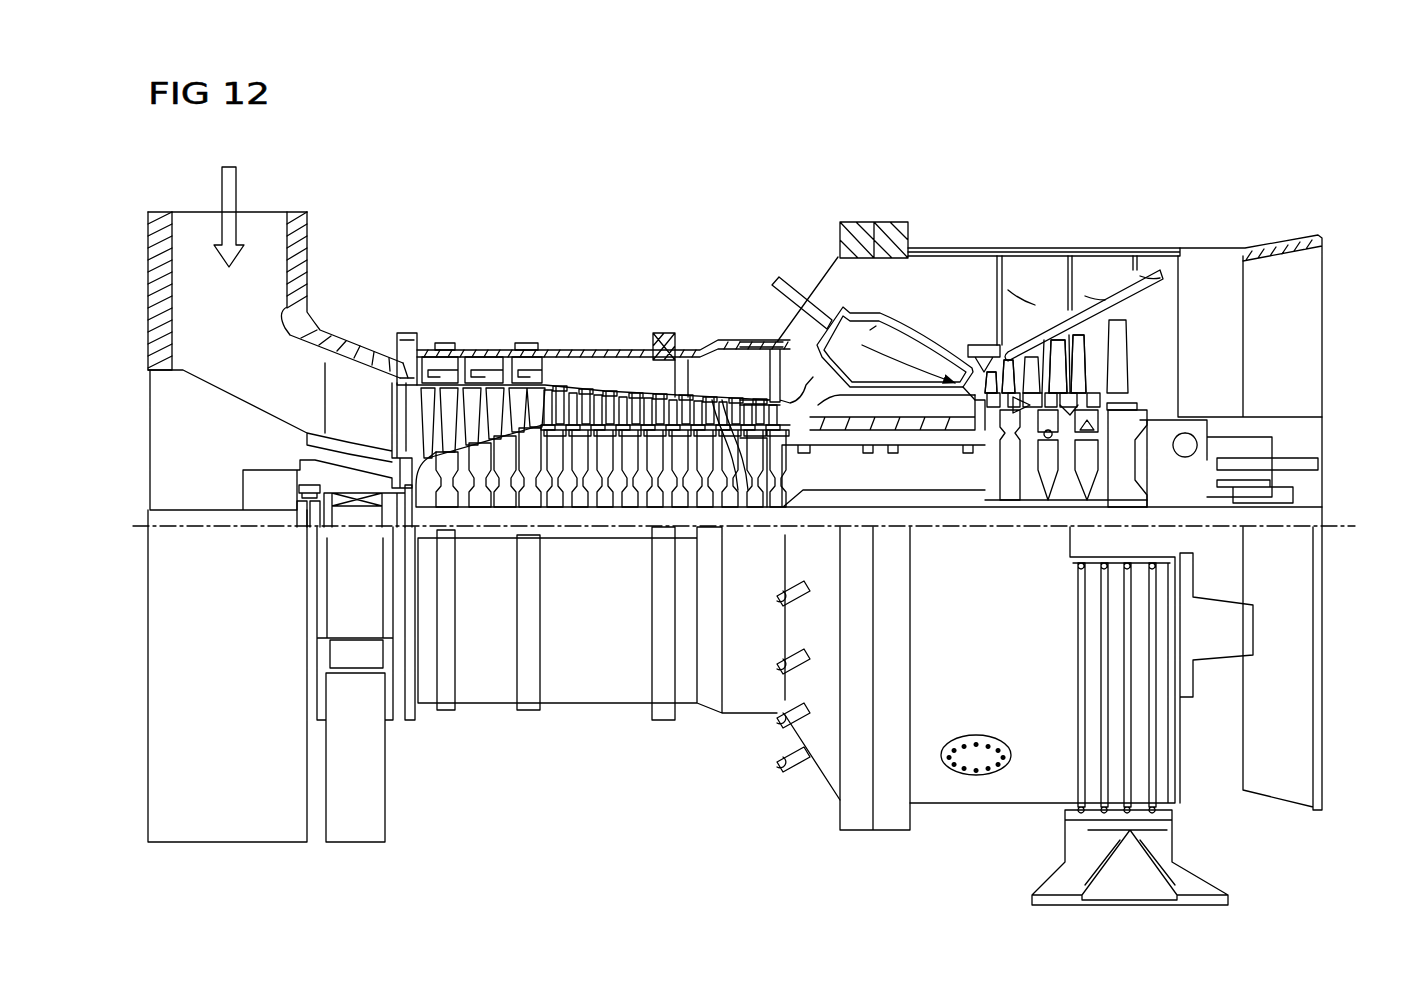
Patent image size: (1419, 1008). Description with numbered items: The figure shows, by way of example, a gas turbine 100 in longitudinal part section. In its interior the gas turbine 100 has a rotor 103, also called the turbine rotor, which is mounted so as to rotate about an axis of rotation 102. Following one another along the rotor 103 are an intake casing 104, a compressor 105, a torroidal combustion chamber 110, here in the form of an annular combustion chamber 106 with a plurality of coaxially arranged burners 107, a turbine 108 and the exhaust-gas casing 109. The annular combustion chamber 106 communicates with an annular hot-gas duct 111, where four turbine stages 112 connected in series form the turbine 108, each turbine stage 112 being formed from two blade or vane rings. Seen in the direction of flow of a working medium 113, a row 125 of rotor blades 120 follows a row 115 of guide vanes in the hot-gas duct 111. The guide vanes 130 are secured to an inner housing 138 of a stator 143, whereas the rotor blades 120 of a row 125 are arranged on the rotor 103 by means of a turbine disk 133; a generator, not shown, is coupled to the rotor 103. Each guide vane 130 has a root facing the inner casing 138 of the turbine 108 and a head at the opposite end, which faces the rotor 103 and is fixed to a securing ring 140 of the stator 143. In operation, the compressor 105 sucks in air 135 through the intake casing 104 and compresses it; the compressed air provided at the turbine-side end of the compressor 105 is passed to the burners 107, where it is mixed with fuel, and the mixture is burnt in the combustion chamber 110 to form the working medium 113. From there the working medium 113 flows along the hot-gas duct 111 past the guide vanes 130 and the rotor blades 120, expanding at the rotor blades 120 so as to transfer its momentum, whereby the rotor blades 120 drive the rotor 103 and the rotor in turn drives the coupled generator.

The gas turbine 100 is at (580, 222).
The axis of rotation 102 is at (142, 523).
The rotor 103 is at (805, 488).
The intake casing 104 is at (298, 278).
The compressor 105 is at (502, 325).
The annular combustion chamber 106 is at (935, 340).
The burners 107 is at (772, 283).
The turbine 108 is at (1003, 225).
The exhaust-gas casing 109 is at (1183, 265).
The combustion chamber 110 is at (873, 307).
The hot-gas duct 111 is at (1145, 343).
The turbine stage 112 is at (1131, 225).
The working medium 113 is at (873, 328).
The row of guide vanes 115 is at (1090, 283).
The rotor blades 120 is at (1050, 420).
The row of rotor blades 125 is at (1152, 274).
The guide vanes 130 is at (1000, 420).
The turbine disk 133 is at (1160, 473).
The air 135 is at (232, 203).
The inner housing 138 is at (1031, 305).
The securing ring 140 is at (975, 400).
The stator 143 is at (922, 360).